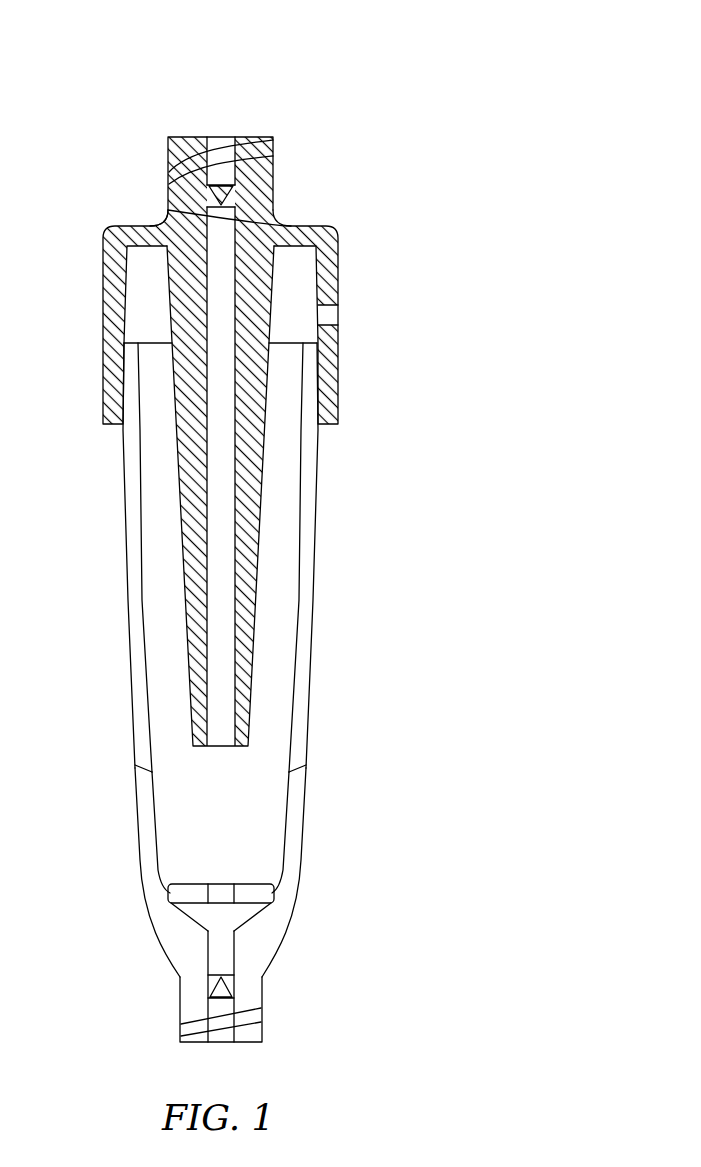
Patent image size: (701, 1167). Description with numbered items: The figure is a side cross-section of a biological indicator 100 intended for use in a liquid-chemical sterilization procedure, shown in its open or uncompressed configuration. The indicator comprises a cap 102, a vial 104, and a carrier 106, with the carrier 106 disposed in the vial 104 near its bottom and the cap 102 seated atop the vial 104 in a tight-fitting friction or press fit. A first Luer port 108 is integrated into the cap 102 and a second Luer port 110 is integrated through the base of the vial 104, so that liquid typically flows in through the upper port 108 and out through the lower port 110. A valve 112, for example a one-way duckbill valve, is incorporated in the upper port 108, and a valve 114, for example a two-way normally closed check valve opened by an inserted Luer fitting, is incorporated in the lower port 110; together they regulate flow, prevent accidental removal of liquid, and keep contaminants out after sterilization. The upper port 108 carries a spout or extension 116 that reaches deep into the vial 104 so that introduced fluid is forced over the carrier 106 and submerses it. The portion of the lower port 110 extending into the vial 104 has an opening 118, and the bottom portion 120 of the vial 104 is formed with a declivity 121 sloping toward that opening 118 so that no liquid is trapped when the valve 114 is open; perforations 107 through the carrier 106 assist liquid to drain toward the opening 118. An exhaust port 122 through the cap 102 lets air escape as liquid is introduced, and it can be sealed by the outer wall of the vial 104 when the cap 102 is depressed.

The biological indicator 100 is at (297, 34).
The cap 102 is at (336, 228).
The vial 104 is at (314, 522).
The carrier 106 is at (250, 883).
The perforations 107 is at (223, 922).
The Luer port 108 is at (274, 167).
The Luer port 110 is at (264, 988).
The valve 112 is at (202, 200).
The valve 114 is at (207, 990).
The spout or extension 116 is at (263, 490).
The opening 118 is at (238, 900).
The bottom portion 120 is at (297, 928).
The declivity 121 is at (188, 916).
The exhaust port 122 is at (350, 312).